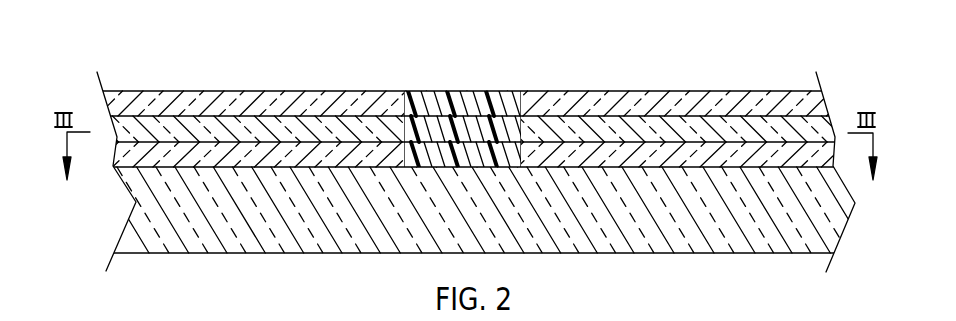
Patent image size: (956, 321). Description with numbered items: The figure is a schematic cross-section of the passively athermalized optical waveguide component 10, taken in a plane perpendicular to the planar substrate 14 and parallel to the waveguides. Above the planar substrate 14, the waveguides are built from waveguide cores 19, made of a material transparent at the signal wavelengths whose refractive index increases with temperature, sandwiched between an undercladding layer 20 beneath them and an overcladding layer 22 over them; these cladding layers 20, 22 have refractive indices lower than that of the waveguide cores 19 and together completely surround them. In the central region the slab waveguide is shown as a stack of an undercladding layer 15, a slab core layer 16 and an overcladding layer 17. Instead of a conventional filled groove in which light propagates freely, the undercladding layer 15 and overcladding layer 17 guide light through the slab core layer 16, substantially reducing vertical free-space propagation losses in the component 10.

The passively athermalized optical waveguide component 10 is at (688, 45).
The planar substrate 14 is at (708, 238).
The undercladding layer 15 is at (410, 92).
The slab core layer 16 is at (497, 125).
The overcladding layer 17 is at (457, 92).
The waveguide cores 19 is at (125, 126).
The undercladding layer 20 is at (130, 157).
The overcladding layer 22 is at (115, 112).